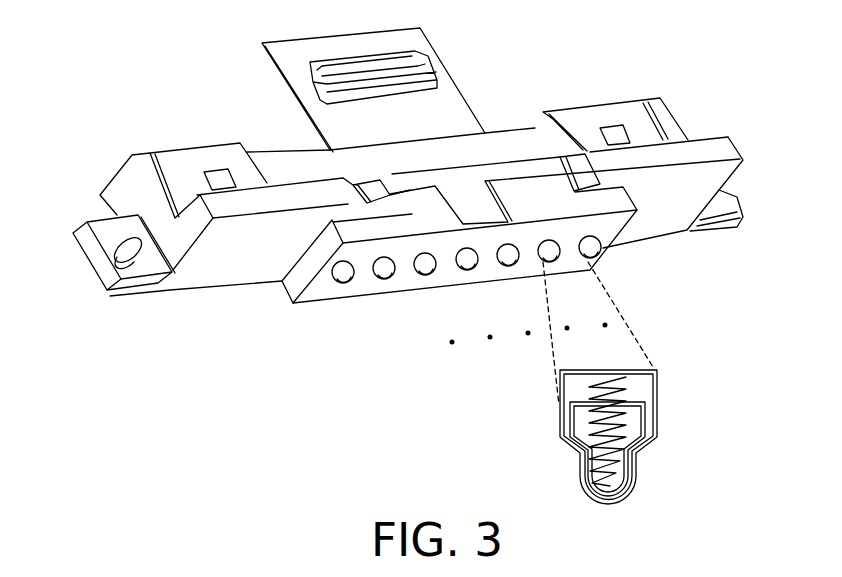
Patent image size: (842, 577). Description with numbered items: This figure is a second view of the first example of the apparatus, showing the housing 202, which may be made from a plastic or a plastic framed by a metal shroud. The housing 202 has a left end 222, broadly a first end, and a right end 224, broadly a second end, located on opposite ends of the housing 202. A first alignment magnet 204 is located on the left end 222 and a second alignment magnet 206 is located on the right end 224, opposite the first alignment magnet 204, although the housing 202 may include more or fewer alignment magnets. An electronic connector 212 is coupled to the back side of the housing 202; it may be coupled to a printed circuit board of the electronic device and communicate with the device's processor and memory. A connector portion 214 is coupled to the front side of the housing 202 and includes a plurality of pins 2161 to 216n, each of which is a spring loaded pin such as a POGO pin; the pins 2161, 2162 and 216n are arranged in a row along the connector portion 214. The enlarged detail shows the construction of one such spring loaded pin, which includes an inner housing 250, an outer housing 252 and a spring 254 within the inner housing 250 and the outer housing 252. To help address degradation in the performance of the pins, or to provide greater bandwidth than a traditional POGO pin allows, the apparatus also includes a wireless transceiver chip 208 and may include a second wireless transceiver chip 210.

The housing 202 is at (737, 150).
The first alignment magnet 204 is at (633, 114).
The second alignment magnet 206 is at (233, 153).
The wireless transceiver chip 208 is at (617, 137).
The second wireless transceiver chip 210 is at (220, 177).
The electronic connector 212 is at (422, 66).
The connector portion 214 is at (317, 293).
The first pin 2161 is at (345, 283).
The second pin 2162 is at (388, 279).
The nth pin 216n is at (601, 256).
The left end 222 is at (680, 123).
The right end 224 is at (123, 193).
The inner housing 250 is at (627, 505).
The outer housing 252 is at (657, 405).
The spring 254 is at (631, 483).